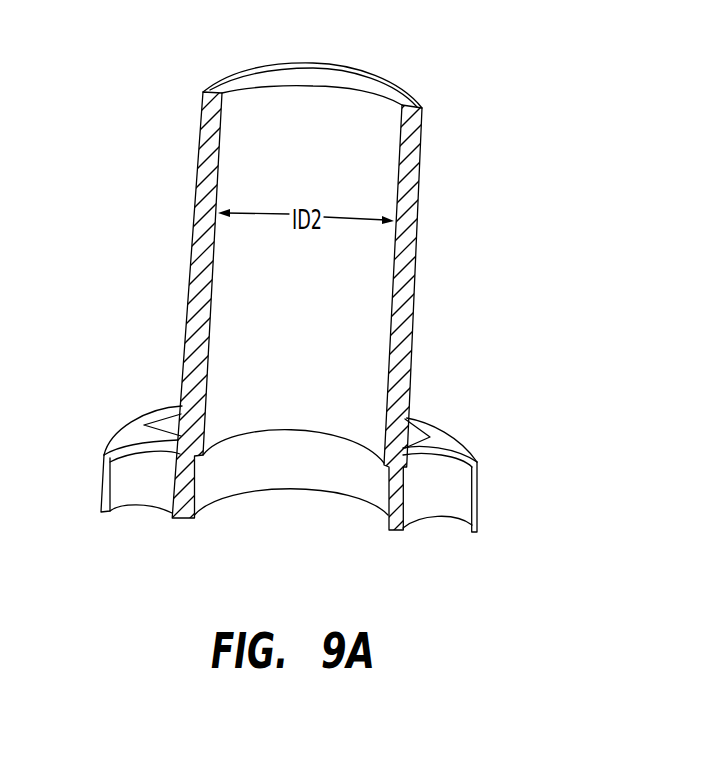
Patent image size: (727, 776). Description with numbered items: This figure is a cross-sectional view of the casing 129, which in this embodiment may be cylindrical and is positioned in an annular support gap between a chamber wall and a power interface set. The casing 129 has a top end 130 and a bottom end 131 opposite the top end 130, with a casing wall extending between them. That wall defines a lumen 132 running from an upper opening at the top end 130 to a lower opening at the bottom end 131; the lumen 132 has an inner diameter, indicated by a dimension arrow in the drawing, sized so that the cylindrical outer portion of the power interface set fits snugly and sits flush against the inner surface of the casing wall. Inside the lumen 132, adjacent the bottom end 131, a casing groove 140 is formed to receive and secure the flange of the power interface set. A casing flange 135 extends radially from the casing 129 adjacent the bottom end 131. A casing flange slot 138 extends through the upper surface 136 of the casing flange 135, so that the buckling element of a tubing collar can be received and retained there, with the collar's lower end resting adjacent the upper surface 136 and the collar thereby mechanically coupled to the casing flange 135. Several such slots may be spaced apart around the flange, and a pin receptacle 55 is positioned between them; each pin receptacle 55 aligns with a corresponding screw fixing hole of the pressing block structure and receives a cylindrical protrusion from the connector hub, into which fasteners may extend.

The casing 129 is at (170, 235).
The top end 130 is at (424, 109).
The lumen 132 is at (278, 100).
The casing flange slot 138 is at (172, 415).
The pin receptacle 55 is at (133, 481).
The upper surface 136 is at (436, 438).
The bottom end 131 is at (433, 446).
The casing flange 135 is at (478, 459).
The casing groove 140 is at (387, 488).